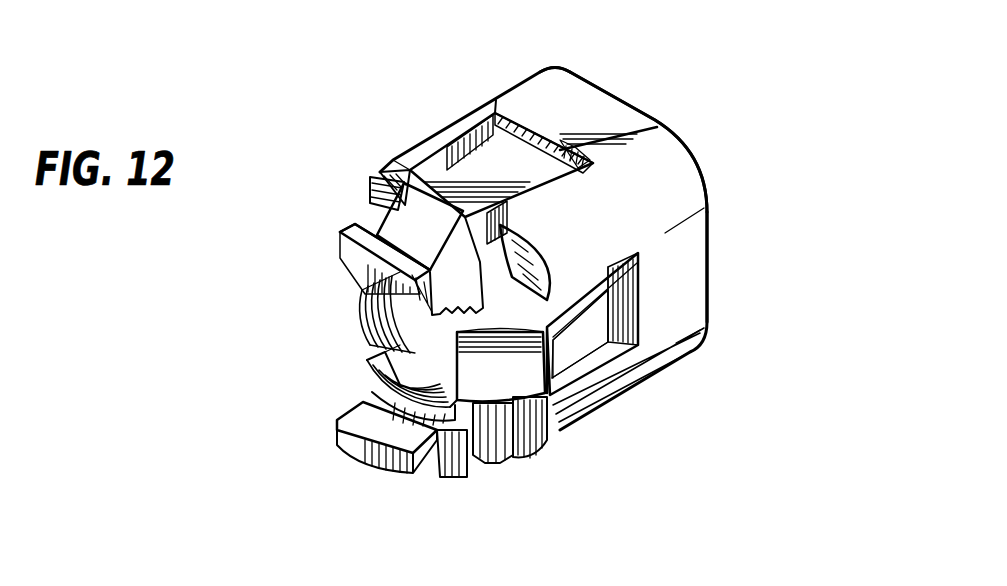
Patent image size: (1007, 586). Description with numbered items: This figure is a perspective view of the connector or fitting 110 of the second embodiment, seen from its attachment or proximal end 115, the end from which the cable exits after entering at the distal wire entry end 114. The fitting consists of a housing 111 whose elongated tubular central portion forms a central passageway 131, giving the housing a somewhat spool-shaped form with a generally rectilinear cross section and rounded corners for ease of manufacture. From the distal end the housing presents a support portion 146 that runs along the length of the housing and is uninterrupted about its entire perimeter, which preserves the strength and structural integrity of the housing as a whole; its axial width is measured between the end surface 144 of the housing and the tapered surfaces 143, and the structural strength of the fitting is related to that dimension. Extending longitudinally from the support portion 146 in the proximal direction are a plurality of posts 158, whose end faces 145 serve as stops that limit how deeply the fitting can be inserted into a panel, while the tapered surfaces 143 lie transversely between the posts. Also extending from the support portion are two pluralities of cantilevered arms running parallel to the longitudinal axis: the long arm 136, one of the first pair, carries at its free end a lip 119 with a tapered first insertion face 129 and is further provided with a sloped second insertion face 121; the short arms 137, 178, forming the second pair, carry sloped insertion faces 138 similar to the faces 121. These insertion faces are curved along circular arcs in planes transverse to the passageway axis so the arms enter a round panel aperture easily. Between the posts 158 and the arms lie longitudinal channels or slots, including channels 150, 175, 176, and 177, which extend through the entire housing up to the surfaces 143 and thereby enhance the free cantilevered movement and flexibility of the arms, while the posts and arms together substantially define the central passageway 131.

The connector or fitting 110 is at (192, 305).
The housing 111 is at (534, 72).
The distal wire entry end 114 is at (745, 309).
The proximal end 115 is at (460, 535).
The lip 119 is at (355, 228).
The sloped second insertion face 121 is at (410, 215).
The first insertion face 129 is at (343, 243).
The central passageway 131 is at (372, 385).
The long arm 136 is at (458, 475).
The short arm 137 is at (362, 304).
The sloped insertion face 138 is at (514, 394).
The tapered surface 143 is at (545, 143).
The end surface 144 is at (650, 80).
The end face 145 is at (385, 173).
The support portion 146 is at (692, 240).
The channel or slot 150 is at (447, 266).
The post 158 is at (445, 128).
The channel or slot 175 is at (515, 442).
The channel or slot 176 is at (373, 352).
The channel or slot 177 is at (497, 108).
The short arm 178 is at (553, 358).